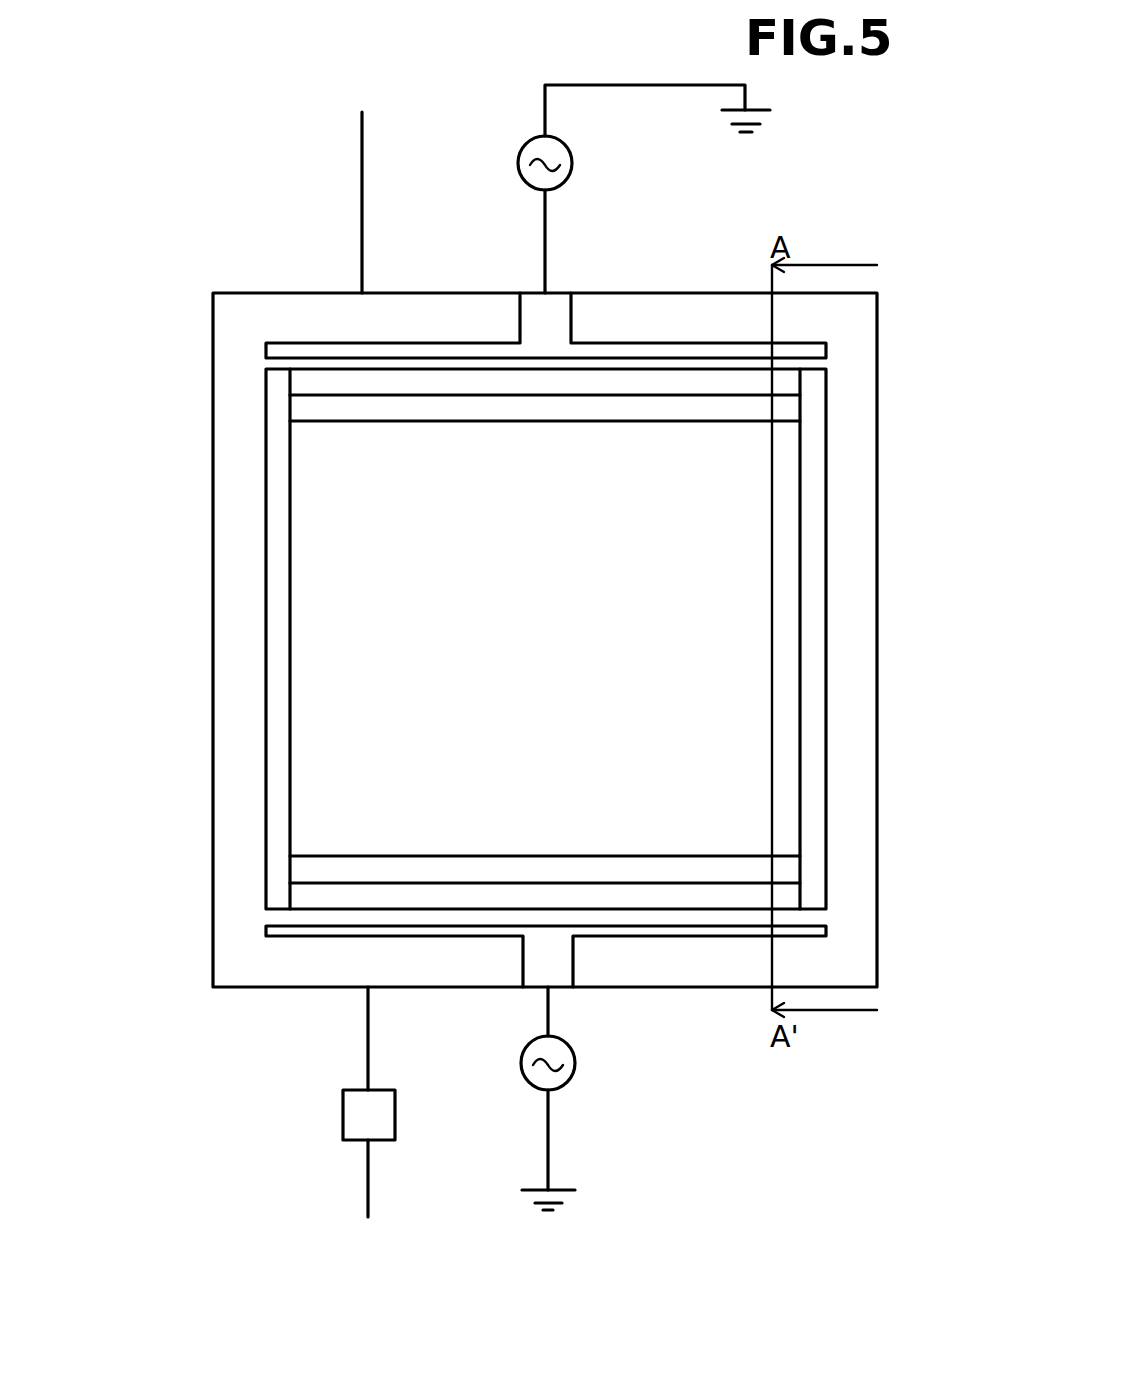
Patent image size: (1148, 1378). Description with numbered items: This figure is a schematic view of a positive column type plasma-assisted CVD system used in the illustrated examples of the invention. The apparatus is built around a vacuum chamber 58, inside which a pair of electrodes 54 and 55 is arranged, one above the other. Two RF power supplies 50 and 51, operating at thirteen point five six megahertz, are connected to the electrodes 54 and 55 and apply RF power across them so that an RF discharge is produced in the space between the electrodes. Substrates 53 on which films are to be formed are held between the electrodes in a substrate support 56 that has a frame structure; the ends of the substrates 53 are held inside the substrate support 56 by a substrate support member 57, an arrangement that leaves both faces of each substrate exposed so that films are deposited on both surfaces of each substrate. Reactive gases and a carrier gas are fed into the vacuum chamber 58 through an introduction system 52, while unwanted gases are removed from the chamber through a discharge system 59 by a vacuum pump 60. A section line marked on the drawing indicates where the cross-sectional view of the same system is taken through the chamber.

The RF power supply 50 is at (596, 180).
The RF power supply 51 is at (618, 1098).
The introduction system 52 is at (291, 202).
The substrates 53 is at (457, 639).
The electrode 54 is at (546, 405).
The electrode 55 is at (546, 847).
The substrate support 56 is at (472, 629).
The substrate support member 57 is at (545, 639).
The vacuum chamber 58 is at (545, 580).
The discharge system 59 is at (270, 1102).
The vacuum pump 60 is at (368, 1115).